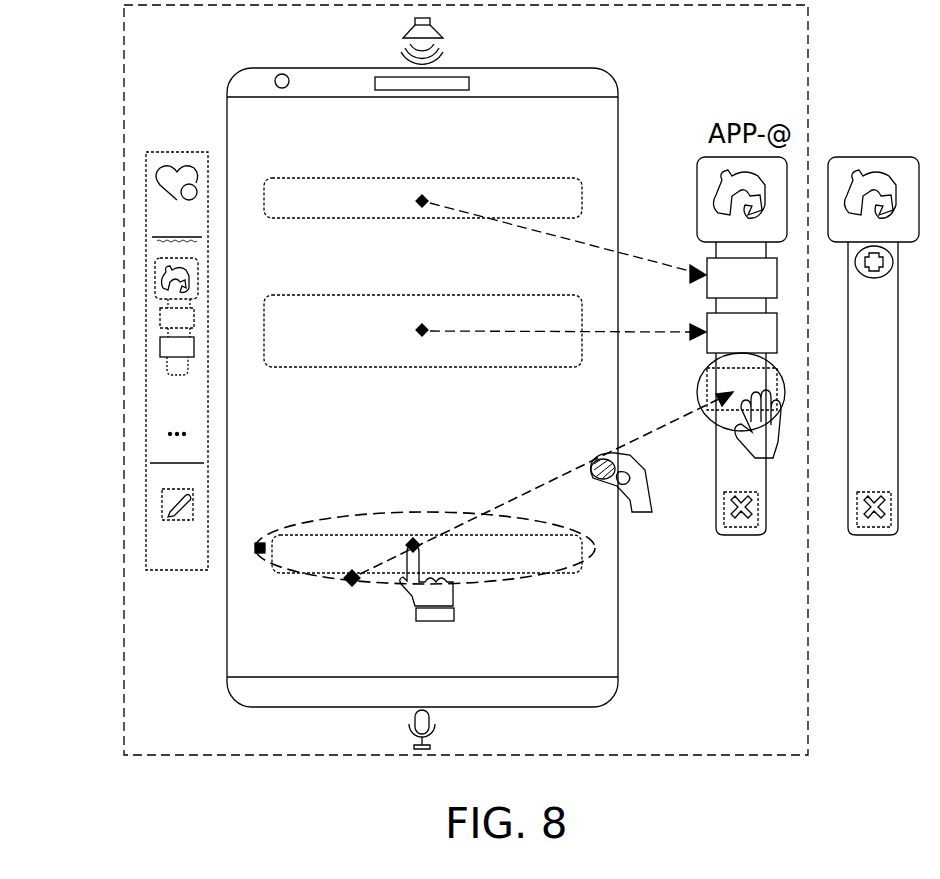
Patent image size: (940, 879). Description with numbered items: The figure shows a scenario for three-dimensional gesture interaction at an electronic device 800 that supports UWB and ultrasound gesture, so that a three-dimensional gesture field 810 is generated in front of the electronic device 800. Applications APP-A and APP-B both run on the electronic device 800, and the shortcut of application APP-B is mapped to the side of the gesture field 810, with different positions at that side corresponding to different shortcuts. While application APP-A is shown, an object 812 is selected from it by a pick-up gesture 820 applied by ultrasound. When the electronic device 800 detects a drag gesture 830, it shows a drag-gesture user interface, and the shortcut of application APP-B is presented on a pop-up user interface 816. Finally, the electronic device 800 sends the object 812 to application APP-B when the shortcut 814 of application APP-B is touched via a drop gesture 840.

The electronic device 800 is at (237, 700).
The 3D gesture field 810 is at (124, 662).
The object 812 is at (360, 535).
The shortcut of the application APP-B 814 is at (697, 385).
The pop-up user interface 816 is at (177, 571).
The pick-up gesture 820 is at (434, 622).
The drag gesture 830 is at (645, 515).
The drop gesture 840 is at (770, 458).